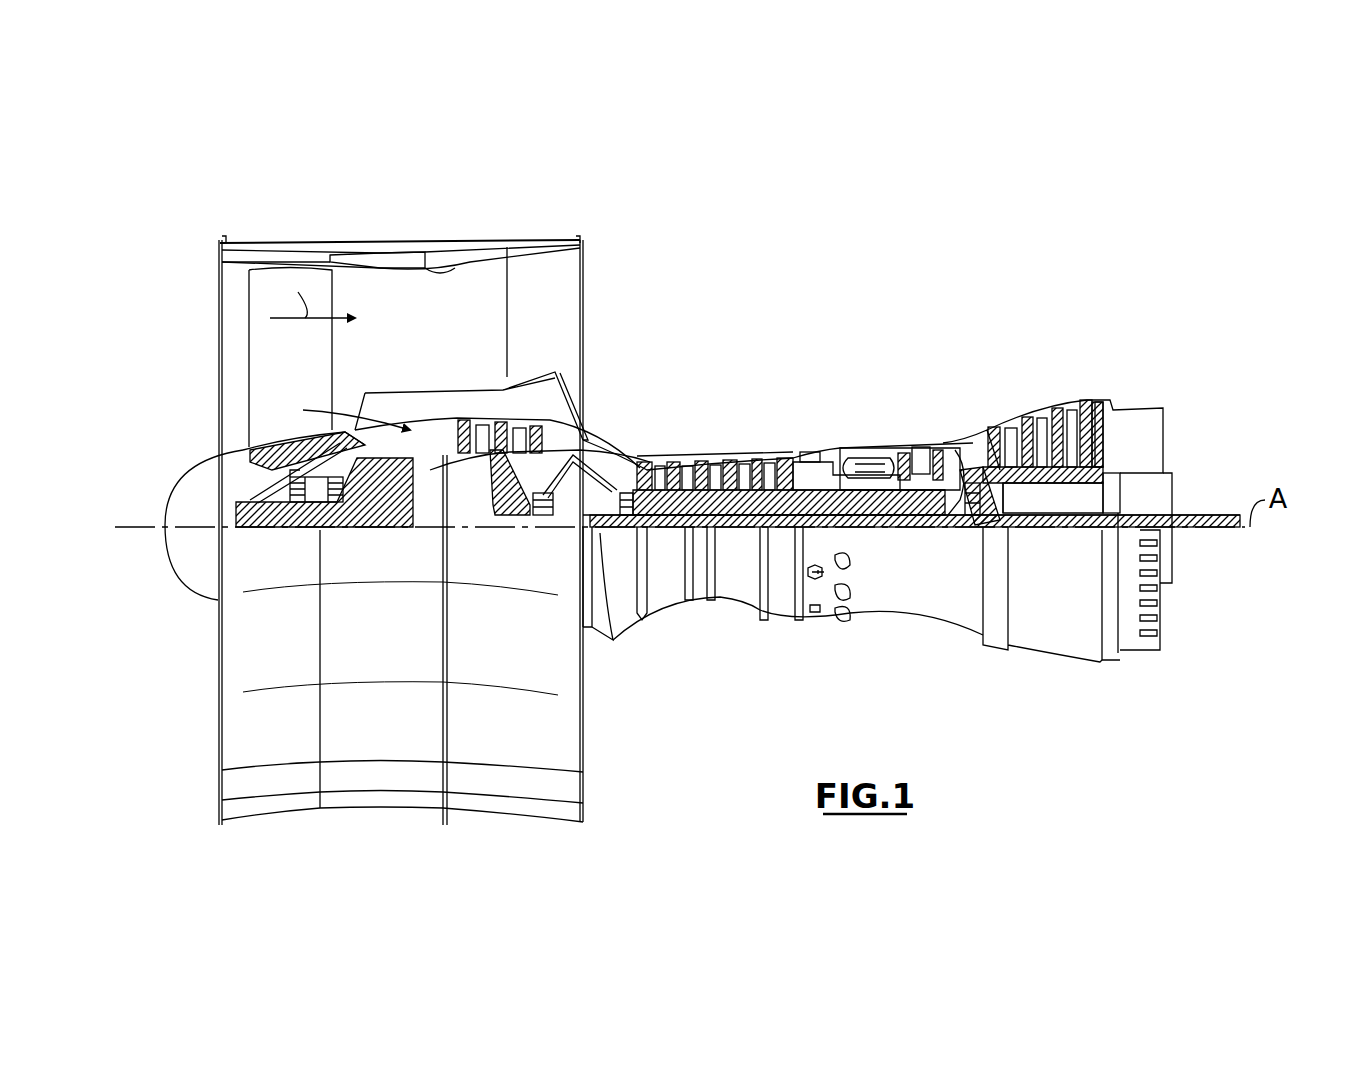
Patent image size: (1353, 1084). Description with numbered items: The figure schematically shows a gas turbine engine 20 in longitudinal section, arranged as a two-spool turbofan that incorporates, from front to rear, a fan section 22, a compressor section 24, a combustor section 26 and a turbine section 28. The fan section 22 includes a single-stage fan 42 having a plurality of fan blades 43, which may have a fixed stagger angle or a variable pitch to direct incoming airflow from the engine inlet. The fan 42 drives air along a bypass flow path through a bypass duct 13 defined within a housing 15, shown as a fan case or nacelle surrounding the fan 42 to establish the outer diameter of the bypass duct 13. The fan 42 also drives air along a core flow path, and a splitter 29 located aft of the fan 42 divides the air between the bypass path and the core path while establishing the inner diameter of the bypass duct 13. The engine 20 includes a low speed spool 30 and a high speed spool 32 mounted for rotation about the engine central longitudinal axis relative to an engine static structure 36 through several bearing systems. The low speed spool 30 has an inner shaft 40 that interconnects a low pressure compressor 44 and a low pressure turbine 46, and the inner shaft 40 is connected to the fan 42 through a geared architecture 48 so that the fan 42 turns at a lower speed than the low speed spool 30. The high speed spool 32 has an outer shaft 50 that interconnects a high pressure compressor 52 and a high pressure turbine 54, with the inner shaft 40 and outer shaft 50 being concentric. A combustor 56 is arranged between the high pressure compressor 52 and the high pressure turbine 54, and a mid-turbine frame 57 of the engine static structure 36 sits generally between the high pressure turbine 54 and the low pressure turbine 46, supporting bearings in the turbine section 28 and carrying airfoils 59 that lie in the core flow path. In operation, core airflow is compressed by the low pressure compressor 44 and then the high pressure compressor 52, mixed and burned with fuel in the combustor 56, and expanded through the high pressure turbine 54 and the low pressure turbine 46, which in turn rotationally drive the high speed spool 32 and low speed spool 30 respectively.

The gas turbine engine 20 is at (865, 293).
The fan section 22 is at (330, 232).
The housing 15 is at (400, 246).
The bypass duct 13 is at (446, 268).
The fan 42 is at (276, 373).
The fan blades 43 is at (320, 375).
The geared architecture 48 is at (408, 512).
The splitter 29 is at (367, 392).
The low pressure compressor 44 is at (510, 437).
The compressor section 24 is at (635, 436).
The high pressure compressor 52 is at (722, 470).
The high speed spool 32 is at (785, 465).
The combustor section 26 is at (856, 420).
The combustor 56 is at (858, 458).
The high pressure turbine 54 is at (925, 445).
The mid-turbine frame 57 is at (965, 430).
The turbine section 28 is at (1007, 385).
The low pressure turbine 46 is at (1045, 420).
The airfoils 59 is at (997, 492).
The inner shaft 40 is at (600, 535).
The low speed spool 30 is at (741, 538).
The engine static structure 36 is at (780, 618).
The outer shaft 50 is at (865, 520).